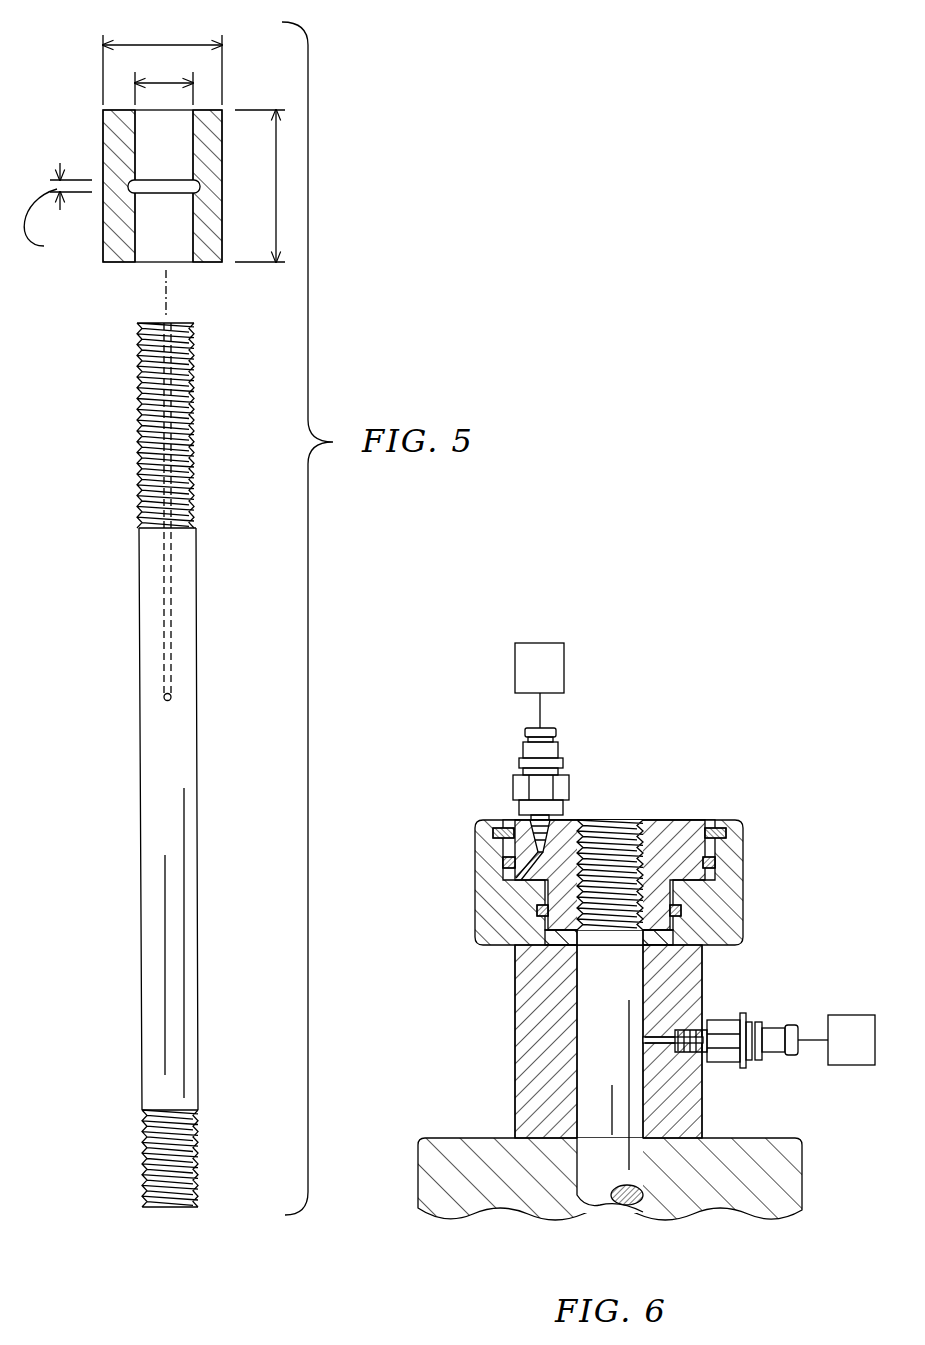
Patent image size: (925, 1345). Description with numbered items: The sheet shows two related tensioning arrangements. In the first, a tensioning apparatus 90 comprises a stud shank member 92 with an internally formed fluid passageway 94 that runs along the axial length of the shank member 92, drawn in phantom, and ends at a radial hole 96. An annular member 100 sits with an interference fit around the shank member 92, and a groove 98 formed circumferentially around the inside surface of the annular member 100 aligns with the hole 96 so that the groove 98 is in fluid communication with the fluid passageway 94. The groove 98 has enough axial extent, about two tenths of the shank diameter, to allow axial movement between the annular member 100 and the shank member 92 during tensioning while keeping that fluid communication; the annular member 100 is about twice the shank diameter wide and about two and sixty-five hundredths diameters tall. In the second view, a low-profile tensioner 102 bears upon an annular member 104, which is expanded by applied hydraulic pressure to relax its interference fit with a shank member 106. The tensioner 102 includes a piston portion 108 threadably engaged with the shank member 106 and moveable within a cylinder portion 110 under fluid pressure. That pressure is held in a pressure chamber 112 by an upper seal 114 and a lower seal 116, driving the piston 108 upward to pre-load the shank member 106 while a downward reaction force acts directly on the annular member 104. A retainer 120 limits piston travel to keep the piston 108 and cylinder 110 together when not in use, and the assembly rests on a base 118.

In FIG. 5, the tensioning apparatus 90 is at (86, 379).
In FIG. 5, the stud shank member 92 is at (140, 818).
In FIG. 5, the fluid passageway 94 is at (164, 633).
In FIG. 5, the radial hole 96 is at (165, 701).
In FIG. 5, the groove 98 is at (162, 194).
In FIG. 5, the annular member 100 is at (103, 122).
In FIG. 6, the low-profile tensioner 102 is at (755, 818).
In FIG. 6, the annular member 104 is at (515, 1028).
In FIG. 6, the shank member 106 is at (605, 820).
In FIG. 6, the piston portion 108 is at (660, 820).
In FIG. 6, the cylinder portion 110 is at (477, 860).
In FIG. 6, the pressure chamber 112 is at (540, 912).
In FIG. 6, the upper seal 114 is at (508, 866).
In FIG. 6, the lower seal 116 is at (532, 942).
In FIG. 6, the base 118 is at (484, 1138).
In FIG. 6, the retainer 120 is at (478, 822).